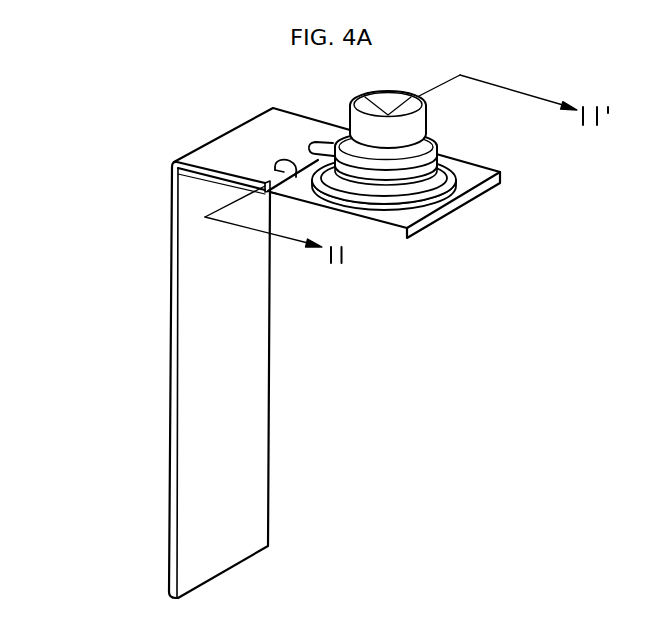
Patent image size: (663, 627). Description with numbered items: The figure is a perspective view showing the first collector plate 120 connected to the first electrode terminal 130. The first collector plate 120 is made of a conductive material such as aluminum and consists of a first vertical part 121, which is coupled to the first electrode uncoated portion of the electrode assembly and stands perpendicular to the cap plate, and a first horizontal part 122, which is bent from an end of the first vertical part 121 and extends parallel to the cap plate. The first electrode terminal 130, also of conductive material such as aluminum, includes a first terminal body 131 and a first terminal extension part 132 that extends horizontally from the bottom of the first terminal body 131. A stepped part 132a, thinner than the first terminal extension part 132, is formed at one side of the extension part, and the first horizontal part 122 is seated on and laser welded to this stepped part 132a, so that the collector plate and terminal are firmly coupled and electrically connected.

The first collector plate 120 is at (183, 353).
The first vertical part 121 is at (178, 224).
The first horizontal part 122 is at (213, 150).
The first electrode terminal 130 is at (415, 222).
The first terminal body 131 is at (438, 174).
The first terminal extension part 132 is at (383, 248).
The stepped part 132a is at (275, 248).